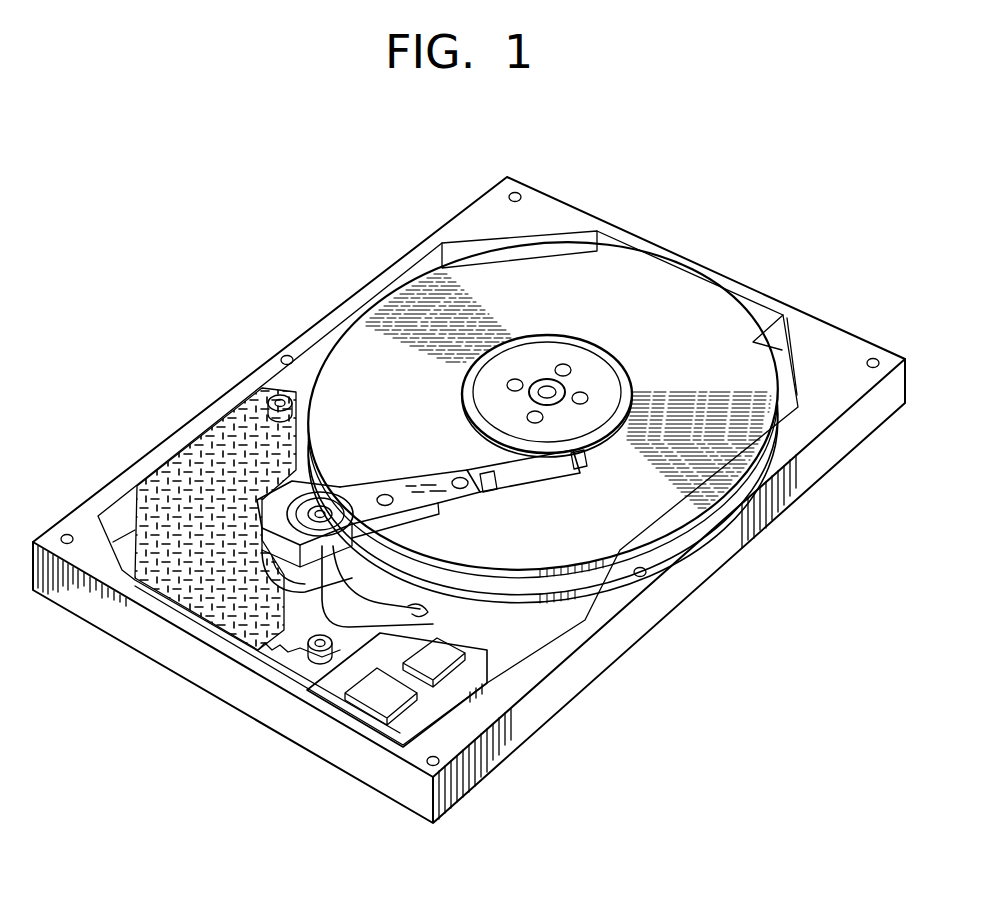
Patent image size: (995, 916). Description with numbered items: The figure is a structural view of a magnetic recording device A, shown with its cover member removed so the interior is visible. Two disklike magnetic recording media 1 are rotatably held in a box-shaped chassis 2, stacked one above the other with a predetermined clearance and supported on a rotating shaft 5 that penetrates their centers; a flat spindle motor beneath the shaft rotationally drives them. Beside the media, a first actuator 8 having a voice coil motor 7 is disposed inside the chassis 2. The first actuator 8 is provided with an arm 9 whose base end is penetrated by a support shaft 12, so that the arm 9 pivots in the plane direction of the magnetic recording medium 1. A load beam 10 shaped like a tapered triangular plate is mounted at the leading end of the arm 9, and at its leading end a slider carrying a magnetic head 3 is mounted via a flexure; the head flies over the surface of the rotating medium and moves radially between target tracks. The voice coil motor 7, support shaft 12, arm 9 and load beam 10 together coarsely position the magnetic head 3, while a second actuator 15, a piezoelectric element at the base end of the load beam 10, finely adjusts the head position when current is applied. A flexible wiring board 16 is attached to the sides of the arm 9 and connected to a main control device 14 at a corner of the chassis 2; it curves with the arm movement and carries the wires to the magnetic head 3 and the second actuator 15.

The magnetic recording device A is at (350, 288).
The magnetic recording medium 1 is at (648, 297).
The chassis 2 is at (807, 472).
The magnetic head 3 is at (586, 456).
The rotating shaft 5 is at (547, 390).
The voice coil motor 7 is at (299, 584).
The first actuator 8 is at (367, 470).
The arm 9 is at (443, 472).
The load beam 10 is at (527, 474).
The support shaft 12 is at (330, 516).
The main control device 14 is at (434, 708).
The second actuator 15 is at (492, 493).
The flexible wiring board 16 is at (402, 612).